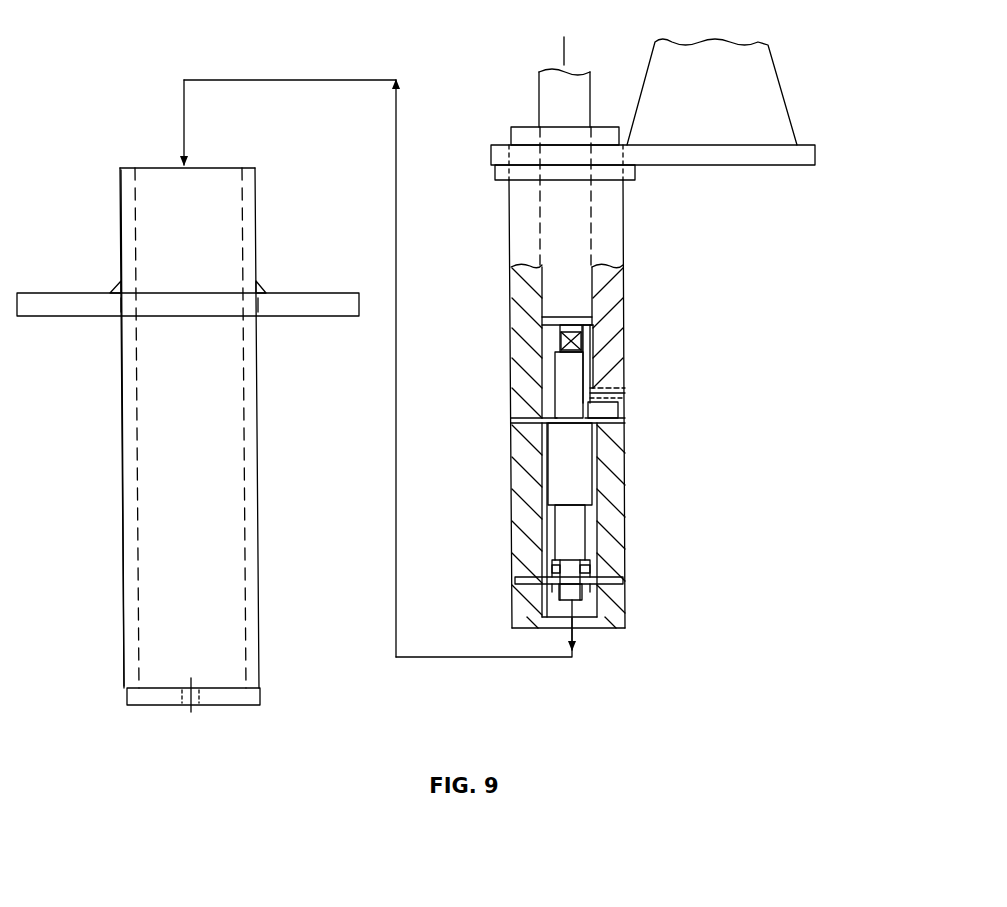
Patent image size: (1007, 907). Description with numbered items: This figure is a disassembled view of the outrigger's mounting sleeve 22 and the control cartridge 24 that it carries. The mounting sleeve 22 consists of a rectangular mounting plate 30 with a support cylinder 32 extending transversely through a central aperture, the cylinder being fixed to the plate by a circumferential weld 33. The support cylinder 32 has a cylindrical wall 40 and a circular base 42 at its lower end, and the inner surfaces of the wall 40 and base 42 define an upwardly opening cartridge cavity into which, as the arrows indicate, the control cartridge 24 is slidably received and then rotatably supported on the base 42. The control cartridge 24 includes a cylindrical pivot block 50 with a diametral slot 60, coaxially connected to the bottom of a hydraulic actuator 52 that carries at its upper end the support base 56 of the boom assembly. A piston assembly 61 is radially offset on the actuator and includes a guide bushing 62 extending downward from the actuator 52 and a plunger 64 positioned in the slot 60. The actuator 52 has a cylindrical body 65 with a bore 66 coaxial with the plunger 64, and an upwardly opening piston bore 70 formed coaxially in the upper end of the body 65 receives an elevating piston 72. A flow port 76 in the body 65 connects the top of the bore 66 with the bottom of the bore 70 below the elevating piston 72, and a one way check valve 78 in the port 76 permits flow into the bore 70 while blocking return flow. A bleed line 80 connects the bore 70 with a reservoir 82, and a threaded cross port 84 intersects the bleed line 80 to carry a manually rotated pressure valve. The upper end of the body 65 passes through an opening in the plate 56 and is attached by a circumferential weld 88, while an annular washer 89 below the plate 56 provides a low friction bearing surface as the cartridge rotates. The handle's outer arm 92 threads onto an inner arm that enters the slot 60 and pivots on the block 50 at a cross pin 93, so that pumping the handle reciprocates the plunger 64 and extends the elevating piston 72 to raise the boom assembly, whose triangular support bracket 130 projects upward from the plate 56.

The mounting sleeve 22 is at (270, 552).
The control cartridge 24 is at (738, 473).
The mounting plate 30 is at (62, 293).
The support cylinder 32 is at (120, 380).
The circumferential weld 33 is at (227, 249).
The cylindrical wall 40 is at (132, 633).
The circular base 42 is at (128, 700).
The pivot block 50 is at (650, 573).
The hydraulic actuator 52 is at (627, 288).
The support base 56 is at (737, 167).
The diametral slot 60 is at (521, 525).
The piston assembly 61 is at (546, 518).
The guide bushing 62 is at (632, 470).
The plunger 64 is at (642, 552).
The cylindrical body 65 is at (517, 393).
The bore 66 is at (567, 367).
The piston bore 70 is at (527, 282).
The elevating piston 72 is at (547, 98).
The flow port 76 is at (558, 350).
The one way check valve 78 is at (563, 340).
The bleed line 80 is at (672, 356).
The reservoir 82 is at (682, 417).
The threaded cross port 84 is at (679, 373).
The circumferential weld 88 is at (506, 142).
The annular washer 89 is at (630, 217).
The outer arm 92 is at (647, 619).
The cross pin 93 is at (647, 600).
The support bracket 130 is at (752, 81).